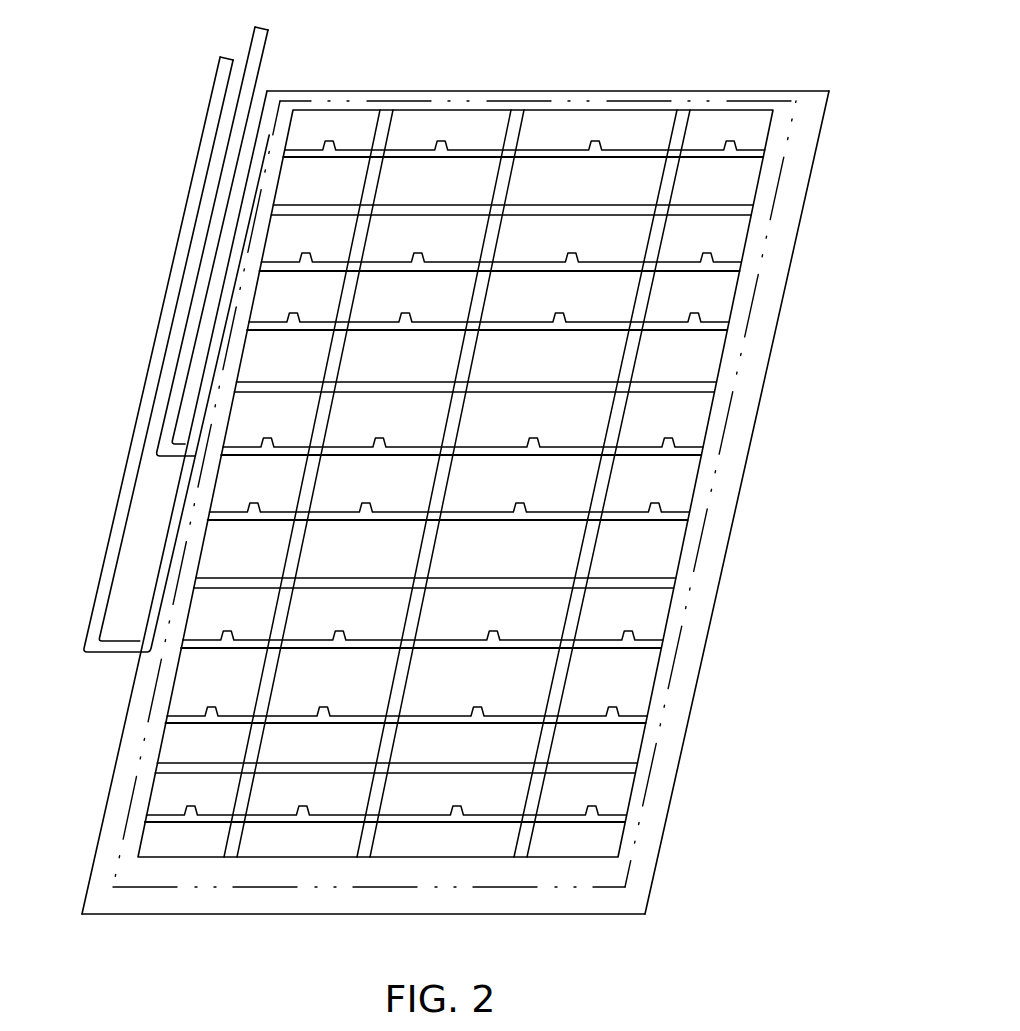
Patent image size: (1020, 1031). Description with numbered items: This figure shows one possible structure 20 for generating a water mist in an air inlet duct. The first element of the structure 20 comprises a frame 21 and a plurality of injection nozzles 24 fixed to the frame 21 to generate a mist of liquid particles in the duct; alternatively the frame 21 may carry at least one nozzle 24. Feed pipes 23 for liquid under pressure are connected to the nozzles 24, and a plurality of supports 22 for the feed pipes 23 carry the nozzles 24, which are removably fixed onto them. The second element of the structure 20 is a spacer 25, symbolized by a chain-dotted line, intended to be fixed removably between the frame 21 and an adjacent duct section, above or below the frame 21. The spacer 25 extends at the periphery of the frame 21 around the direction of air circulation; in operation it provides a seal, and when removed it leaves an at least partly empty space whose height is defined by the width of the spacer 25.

The structure 20 is at (824, 470).
The frame 21 is at (111, 819).
The supports 22 is at (165, 768).
The feed pipes 23 is at (178, 346).
The injection nozzles 24 is at (707, 316).
The spacer 25 is at (662, 746).